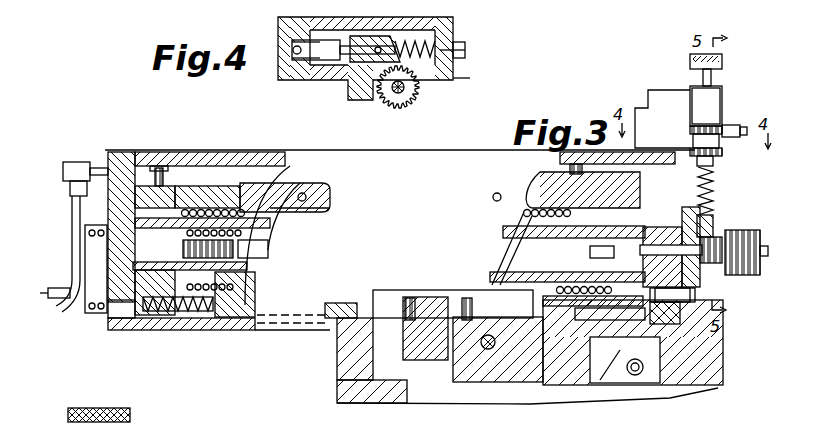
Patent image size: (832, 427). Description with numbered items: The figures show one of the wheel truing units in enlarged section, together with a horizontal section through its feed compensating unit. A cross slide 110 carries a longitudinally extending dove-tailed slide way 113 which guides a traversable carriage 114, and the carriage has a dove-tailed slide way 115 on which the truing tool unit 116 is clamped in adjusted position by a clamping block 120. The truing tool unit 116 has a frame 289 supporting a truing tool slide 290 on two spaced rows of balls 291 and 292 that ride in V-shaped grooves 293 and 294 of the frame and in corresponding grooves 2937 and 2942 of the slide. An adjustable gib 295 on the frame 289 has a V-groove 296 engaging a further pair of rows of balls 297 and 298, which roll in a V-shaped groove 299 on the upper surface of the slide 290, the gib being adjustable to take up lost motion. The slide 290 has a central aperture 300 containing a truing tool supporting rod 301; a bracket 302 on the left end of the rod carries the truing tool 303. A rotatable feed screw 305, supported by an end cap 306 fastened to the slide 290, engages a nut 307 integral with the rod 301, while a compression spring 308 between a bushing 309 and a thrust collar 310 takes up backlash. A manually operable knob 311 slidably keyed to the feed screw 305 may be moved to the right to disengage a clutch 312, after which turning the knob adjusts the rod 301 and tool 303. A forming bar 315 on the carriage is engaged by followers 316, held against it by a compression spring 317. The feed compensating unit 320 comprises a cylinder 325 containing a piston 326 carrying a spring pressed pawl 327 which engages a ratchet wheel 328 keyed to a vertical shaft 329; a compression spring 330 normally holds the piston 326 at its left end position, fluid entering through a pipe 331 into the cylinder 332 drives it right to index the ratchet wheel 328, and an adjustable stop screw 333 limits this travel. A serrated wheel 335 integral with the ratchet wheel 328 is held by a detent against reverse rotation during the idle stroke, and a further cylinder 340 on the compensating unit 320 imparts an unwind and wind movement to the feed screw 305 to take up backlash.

In FIG. 4, the piston 326 is at (335, 30).
In FIG. 4, the pipe 331 is at (292, 46).
In FIG. 4, the cylinder 332 is at (292, 60).
In FIG. 4, the cylinder 325 is at (345, 70).
In FIG. 3, the cylinder 325 is at (662, 119).
In FIG. 4, the spring pressed pawl 327 is at (372, 64).
In FIG. 4, the ratchet wheel 328 is at (396, 94).
In FIG. 3, the ratchet wheel 328 is at (725, 138).
In FIG. 4, the vertical shaft 329 is at (412, 94).
In FIG. 3, the vertical shaft 329 is at (714, 220).
In FIG. 4, the compression spring 330 is at (440, 30).
In FIG. 4, the adjustable stop screw 333 is at (462, 48).
In FIG. 4, the feed compensating unit 320 is at (453, 78).
In FIG. 3, the feed compensating unit 320 is at (726, 76).
In FIG. 3, the truing tool unit 116 is at (300, 148).
In FIG. 3, the row of balls 297 is at (159, 166).
In FIG. 3, the frame 289 is at (252, 170).
In FIG. 3, the thrust collar 310 is at (262, 179).
In FIG. 3, the adjustable gib 295 is at (300, 185).
In FIG. 3, the V-shaped groove 299 is at (306, 198).
In FIG. 3, the V-groove 296 is at (312, 210).
In FIG. 3, the central aperture 300 is at (272, 226).
In FIG. 3, the compression spring 308 is at (183, 250).
In FIG. 3, the truing tool supporting rod 301 is at (253, 249).
In FIG. 3, the bearing retainer 2937 is at (250, 268).
In FIG. 3, the V-shaped groove 293 is at (255, 290).
In FIG. 3, the bushing 309 is at (160, 315).
In FIG. 3, the row of balls 291 is at (195, 312).
In FIG. 3, the truing tool slide 290 is at (234, 330).
In FIG. 3, the compression spring 317 is at (118, 318).
In FIG. 3, the bracket 302 is at (85, 240).
In FIG. 3, the truing tool 303 is at (48, 298).
In FIG. 3, the row of balls 298 is at (545, 174).
In FIG. 3, the bearing assembly 2942 is at (502, 252).
In FIG. 3, the row of balls 292 is at (567, 263).
In FIG. 3, the V-shaped groove 294 is at (594, 306).
In FIG. 3, the nut 307 is at (655, 230).
In FIG. 3, the end cap 306 is at (715, 190).
In FIG. 3, the clutch 312 is at (720, 238).
In FIG. 3, the manually operable knob 311 is at (740, 277).
In FIG. 3, the feed screw 305 is at (678, 297).
In FIG. 3, the cylinder 340 is at (707, 106).
In FIG. 3, the serrated wheel 335 is at (712, 160).
In FIG. 3, the cross slide 110 is at (657, 392).
In FIG. 3, the carriage 114 is at (345, 358).
In FIG. 3, the dove-tailed slide way 113 is at (360, 376).
In FIG. 3, the dove-tailed slide way 115 is at (346, 306).
In FIG. 3, the clamping block 120 is at (672, 318).
In FIG. 3, the forming bar 315 is at (440, 292).
In FIG. 3, the follower 316 is at (470, 296).